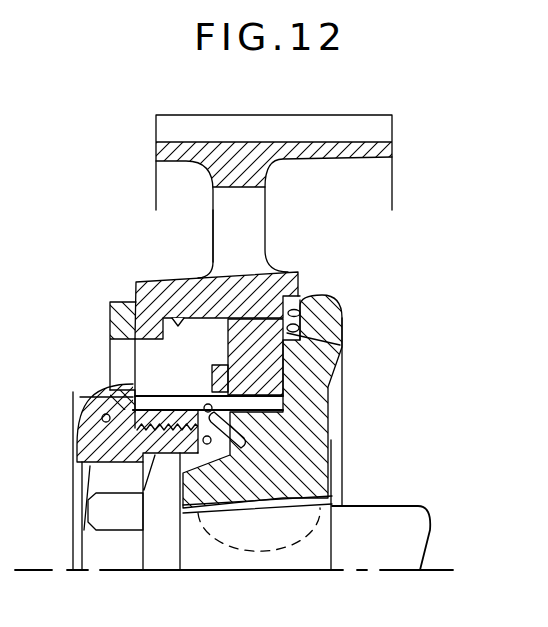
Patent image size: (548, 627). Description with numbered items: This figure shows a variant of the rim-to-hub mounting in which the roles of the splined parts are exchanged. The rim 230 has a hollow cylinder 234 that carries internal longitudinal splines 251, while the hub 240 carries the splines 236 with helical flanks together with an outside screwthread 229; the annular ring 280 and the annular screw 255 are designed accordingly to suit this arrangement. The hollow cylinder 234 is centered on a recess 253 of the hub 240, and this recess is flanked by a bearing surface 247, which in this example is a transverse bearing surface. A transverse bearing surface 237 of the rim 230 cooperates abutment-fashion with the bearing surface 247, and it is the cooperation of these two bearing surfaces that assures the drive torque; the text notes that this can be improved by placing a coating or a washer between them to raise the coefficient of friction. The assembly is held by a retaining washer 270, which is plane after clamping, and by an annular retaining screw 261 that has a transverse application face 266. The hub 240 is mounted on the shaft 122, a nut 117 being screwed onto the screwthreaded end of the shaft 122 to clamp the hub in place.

The rim 230 is at (270, 188).
The hollow cylinder 234 is at (186, 275).
The internal longitudinal splines 251 is at (178, 320).
The annular ring 280 is at (240, 316).
The transverse bearing surface 237 is at (311, 296).
The bearing surface 247 is at (323, 297).
The recess 253 is at (340, 347).
The hub 240 is at (348, 418).
The shaft 122 is at (407, 505).
The splines 236 is at (228, 420).
The annular screw 255 is at (209, 379).
The outside screwthread 229 is at (163, 390).
The retaining washer 270 is at (117, 300).
The transverse application face 266 is at (80, 394).
The annular retaining screw 261 is at (74, 452).
The nut 117 is at (72, 553).